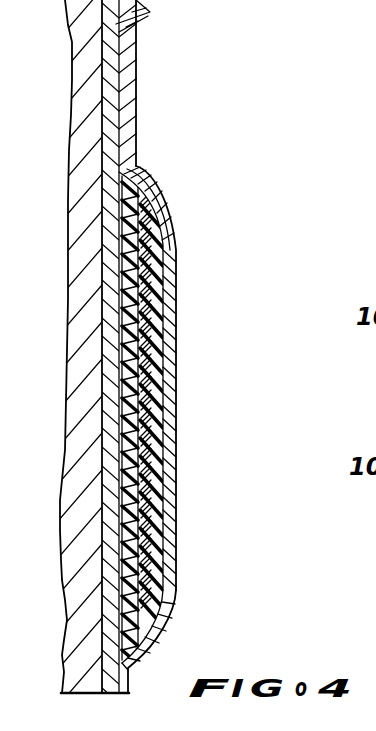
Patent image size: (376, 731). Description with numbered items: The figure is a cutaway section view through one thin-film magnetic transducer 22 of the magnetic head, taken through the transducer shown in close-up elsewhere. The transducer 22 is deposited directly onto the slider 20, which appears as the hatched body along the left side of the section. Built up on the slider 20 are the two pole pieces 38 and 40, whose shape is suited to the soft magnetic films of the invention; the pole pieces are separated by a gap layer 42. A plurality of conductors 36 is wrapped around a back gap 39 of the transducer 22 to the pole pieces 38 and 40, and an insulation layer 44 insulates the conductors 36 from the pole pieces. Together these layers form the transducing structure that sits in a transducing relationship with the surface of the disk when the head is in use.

The slider 20 is at (72, 136).
The transducer 22 is at (168, 172).
The conductors 36 is at (152, 254).
The pole piece 38 is at (177, 594).
The back gap 39 is at (132, 78).
The pole piece 40 is at (112, 424).
The gap layer 42 is at (116, 479).
The insulation layer 44 is at (108, 244).